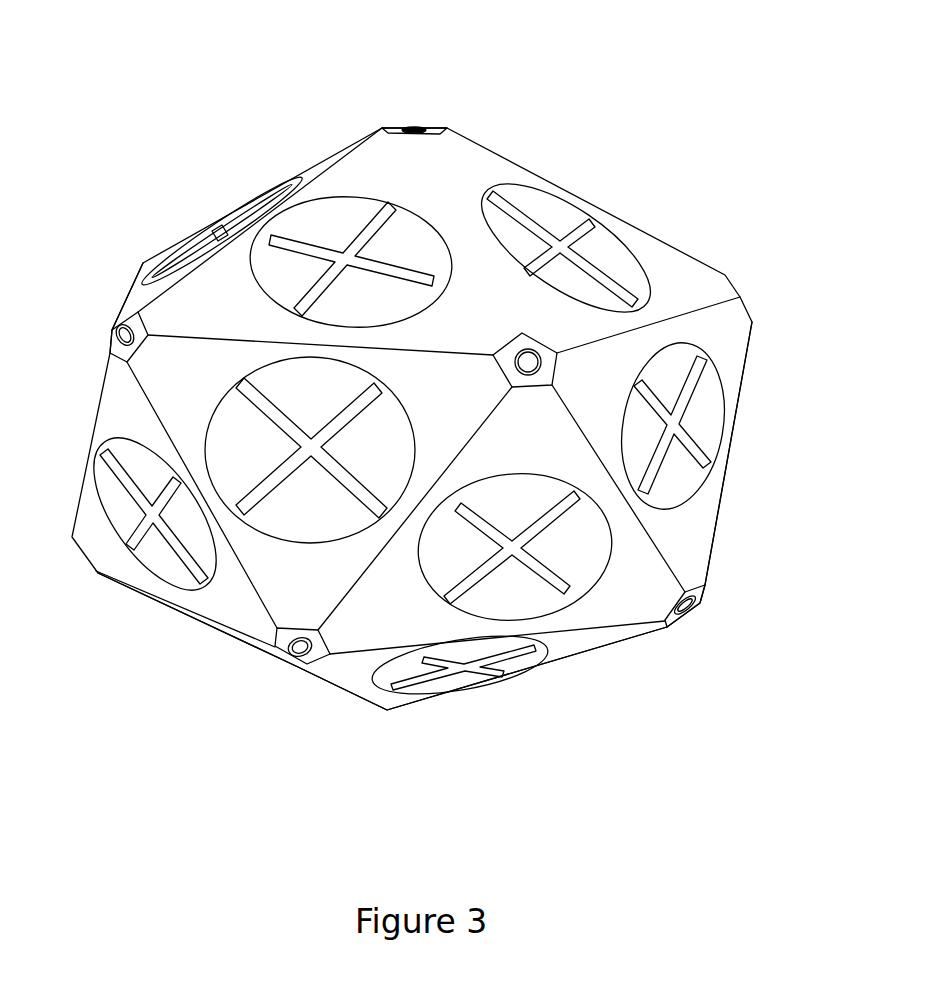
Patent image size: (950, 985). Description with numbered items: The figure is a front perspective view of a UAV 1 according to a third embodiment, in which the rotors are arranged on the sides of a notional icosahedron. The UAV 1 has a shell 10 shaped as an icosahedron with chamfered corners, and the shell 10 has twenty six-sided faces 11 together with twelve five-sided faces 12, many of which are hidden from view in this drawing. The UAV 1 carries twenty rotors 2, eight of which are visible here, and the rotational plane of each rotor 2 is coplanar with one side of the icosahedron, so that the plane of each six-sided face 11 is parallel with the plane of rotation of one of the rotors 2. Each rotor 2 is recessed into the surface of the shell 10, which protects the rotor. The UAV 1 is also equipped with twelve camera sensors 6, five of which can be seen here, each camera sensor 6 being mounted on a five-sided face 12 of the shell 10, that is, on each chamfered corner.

The UAV 1 is at (592, 115).
The rotor 2 is at (222, 231).
The camera sensor 6 is at (413, 128).
The shell 10 is at (718, 517).
The six-sided face 11 is at (372, 158).
The five-sided face 12 is at (430, 130).